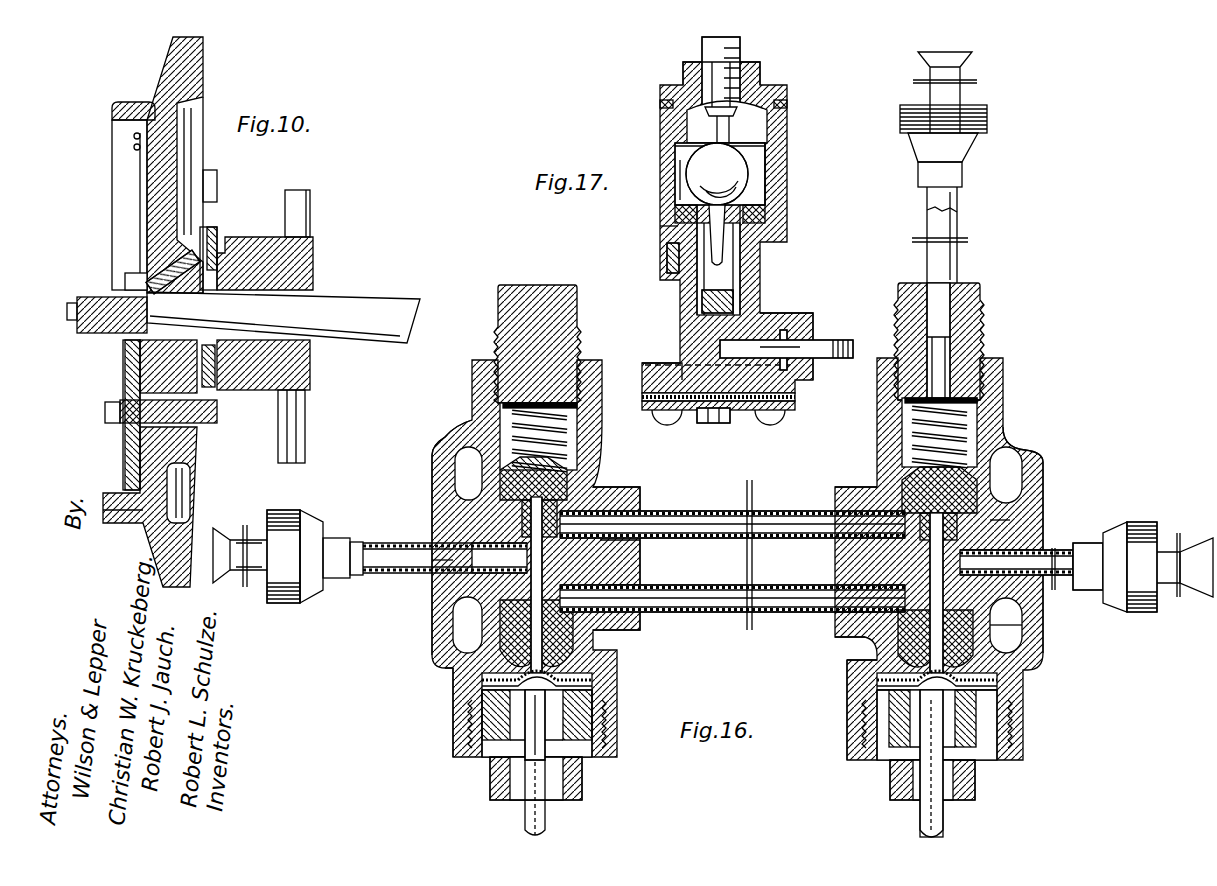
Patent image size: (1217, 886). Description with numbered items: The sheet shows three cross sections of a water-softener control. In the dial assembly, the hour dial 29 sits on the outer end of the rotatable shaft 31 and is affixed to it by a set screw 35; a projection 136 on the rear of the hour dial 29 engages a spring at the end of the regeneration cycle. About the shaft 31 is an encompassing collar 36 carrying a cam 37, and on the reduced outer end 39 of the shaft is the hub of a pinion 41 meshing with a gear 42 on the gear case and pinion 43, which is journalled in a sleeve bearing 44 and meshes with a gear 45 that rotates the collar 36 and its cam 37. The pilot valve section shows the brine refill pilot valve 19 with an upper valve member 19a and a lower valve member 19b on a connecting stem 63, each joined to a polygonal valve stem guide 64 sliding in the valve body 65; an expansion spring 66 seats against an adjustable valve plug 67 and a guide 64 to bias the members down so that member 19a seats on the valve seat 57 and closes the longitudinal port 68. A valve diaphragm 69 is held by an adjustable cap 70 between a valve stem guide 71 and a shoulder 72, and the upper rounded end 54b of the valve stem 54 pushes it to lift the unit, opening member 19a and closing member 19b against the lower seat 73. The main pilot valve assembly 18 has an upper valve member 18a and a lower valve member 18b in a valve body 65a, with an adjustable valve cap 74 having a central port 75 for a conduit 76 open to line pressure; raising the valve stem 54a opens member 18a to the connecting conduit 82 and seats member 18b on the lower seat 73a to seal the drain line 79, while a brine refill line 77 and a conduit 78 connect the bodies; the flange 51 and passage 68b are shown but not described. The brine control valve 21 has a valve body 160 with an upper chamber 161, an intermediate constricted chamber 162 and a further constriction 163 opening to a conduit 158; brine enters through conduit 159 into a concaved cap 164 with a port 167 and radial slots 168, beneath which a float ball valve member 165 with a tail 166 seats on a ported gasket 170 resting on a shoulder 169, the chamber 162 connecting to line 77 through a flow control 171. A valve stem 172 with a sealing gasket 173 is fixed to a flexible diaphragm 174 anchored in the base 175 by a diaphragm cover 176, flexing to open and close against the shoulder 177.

In FIG. 10, the hour dial 29 is at (152, 100).
In FIG. 10, the rotatable shaft 31 is at (358, 292).
In FIG. 10, the set screw 35 is at (200, 262).
In FIG. 10, the collar 36 is at (313, 252).
In FIG. 10, the cam 37 is at (311, 201).
In FIG. 10, the reduced outer end 39 is at (95, 332).
In FIG. 10, the pinion 41 is at (125, 282).
In FIG. 10, the gear 42 is at (125, 372).
In FIG. 10, the gear case and pinion 43 is at (214, 425).
In FIG. 10, the sleeve bearing 44 is at (197, 462).
In FIG. 10, the gear 45 is at (217, 236).
In FIG. 10, the projection 136 is at (217, 176).
In FIG. 16, the main pilot valve assembly 18 is at (1010, 372).
In FIG. 16, the upper valve member 18a is at (1003, 520).
In FIG. 16, the lower valve member 18b is at (1009, 623).
In FIG. 16, the brine refill pilot valve 19 is at (602, 365).
In FIG. 16, the upper valve member 19a is at (600, 500).
In FIG. 16, the lower valve member 19b is at (638, 630).
In FIG. 16, the flange 51 is at (865, 562).
In FIG. 16, the valve stem 54 is at (548, 820).
In FIG. 16, the valve stem 54a is at (946, 820).
In FIG. 16, the upper rounded end 54b is at (545, 750).
In FIG. 16, the valve seat 57 is at (456, 534).
In FIG. 16, the connecting stem 63 is at (545, 560).
In FIG. 16, the valve stem guide 64 is at (570, 475).
In FIG. 16, the valve body 65 is at (445, 440).
In FIG. 16, the valve body 65a is at (1043, 500).
In FIG. 16, the expansion spring 66 is at (575, 428).
In FIG. 16, the adjustable valve plug 67 is at (578, 305).
In FIG. 16, the longitudinal port 68 is at (630, 560).
In FIG. 16, the partition 68b is at (1001, 576).
In FIG. 16, the valve diaphragm 69 is at (592, 690).
In FIG. 16, the adjustable cap 70 is at (490, 772).
In FIG. 16, the valve stem guide 71 is at (482, 712).
In FIG. 16, the shoulder 72 is at (453, 672).
In FIG. 16, the lower seat 73 is at (483, 577).
In FIG. 16, the lower seat 73a is at (860, 625).
In FIG. 16, the adjustable valve cap 74 is at (982, 340).
In FIG. 16, the central port 75 is at (948, 340).
In FIG. 16, the conduit 76 is at (958, 262).
In FIG. 16, the brine refill line 77 is at (375, 580).
In FIG. 16, the conduit 78 is at (712, 511).
In FIG. 16, the drain line 79 is at (708, 585).
In FIG. 16, the connecting conduit 82 is at (1048, 550).
In FIG. 17, the brine control valve 21 is at (660, 118).
In FIG. 17, the conduit 158 is at (852, 342).
In FIG. 17, the conduit 159 is at (702, 46).
In FIG. 17, the valve body 160 is at (749, 172).
In FIG. 17, the upper chamber 161 is at (762, 150).
In FIG. 17, the intermediate constricted chamber 162 is at (742, 252).
In FIG. 17, the further constriction 163 is at (735, 305).
In FIG. 17, the concaved cap 164 is at (745, 100).
In FIG. 17, the float ball valve member 165 is at (757, 160).
In FIG. 17, the stem or tail 166 is at (724, 240).
In FIG. 17, the port 167 is at (748, 70).
In FIG. 17, the radial slot 168 is at (772, 120).
In FIG. 17, the shoulder 169 is at (660, 221).
In FIG. 17, the ported gasket 170 is at (776, 196).
In FIG. 17, the flow control 171 is at (667, 256).
In FIG. 17, the valve stem 172 is at (813, 326).
In FIG. 17, the sealing gasket 173 is at (784, 330).
In FIG. 17, the flexible diaphragm 174 is at (740, 422).
In FIG. 17, the base 175 is at (795, 399).
In FIG. 17, the diaphragm cover 176 is at (731, 414).
In FIG. 17, the shoulder 177 is at (682, 330).